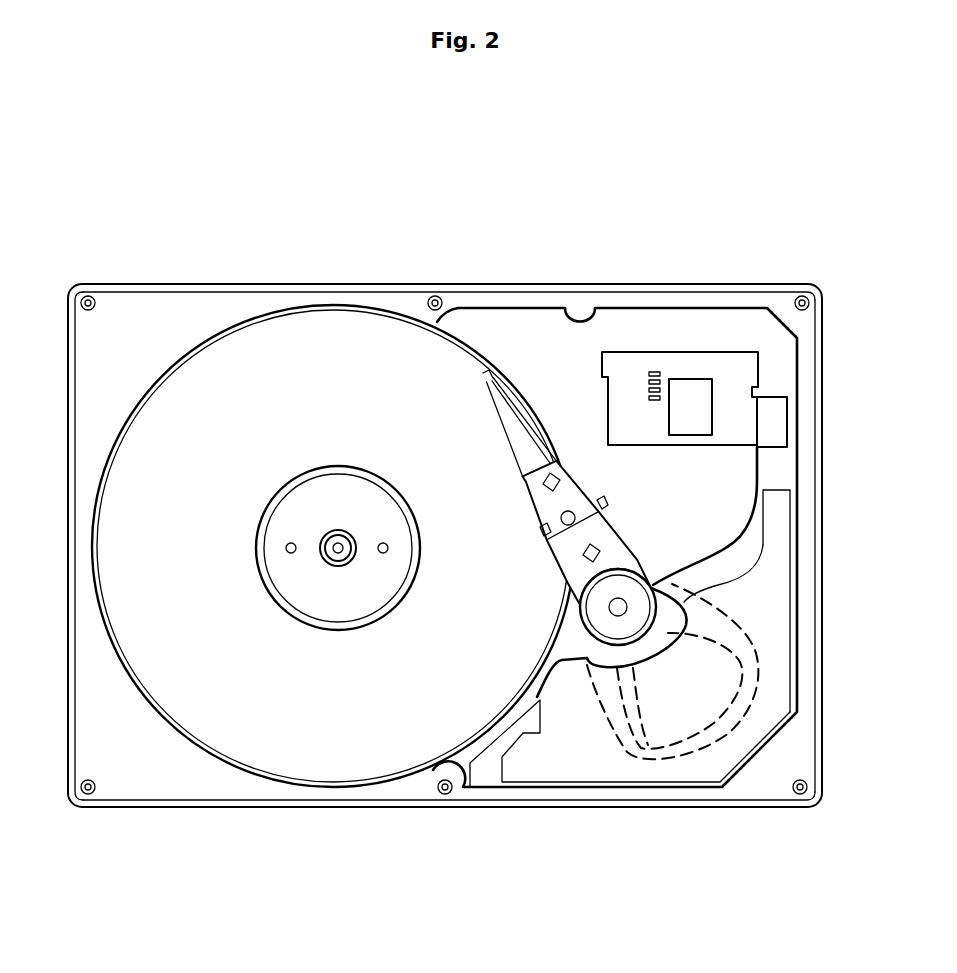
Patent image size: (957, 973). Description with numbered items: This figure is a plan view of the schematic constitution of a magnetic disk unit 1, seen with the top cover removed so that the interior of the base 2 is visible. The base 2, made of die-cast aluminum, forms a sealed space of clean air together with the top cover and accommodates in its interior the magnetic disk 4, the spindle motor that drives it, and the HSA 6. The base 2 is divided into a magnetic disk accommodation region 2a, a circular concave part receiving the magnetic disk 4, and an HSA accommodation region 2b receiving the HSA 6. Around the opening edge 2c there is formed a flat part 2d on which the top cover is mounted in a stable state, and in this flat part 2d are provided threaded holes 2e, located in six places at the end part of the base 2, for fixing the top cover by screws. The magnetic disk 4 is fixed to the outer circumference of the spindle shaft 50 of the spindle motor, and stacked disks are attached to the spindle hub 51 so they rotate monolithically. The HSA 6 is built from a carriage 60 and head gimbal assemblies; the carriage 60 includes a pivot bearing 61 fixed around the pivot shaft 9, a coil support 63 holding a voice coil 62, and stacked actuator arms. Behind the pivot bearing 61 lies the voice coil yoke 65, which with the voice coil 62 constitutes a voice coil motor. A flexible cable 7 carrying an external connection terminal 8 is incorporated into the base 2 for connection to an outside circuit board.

The magnetic disk unit 1 is at (451, 195).
The base 2 is at (190, 286).
The magnetic disk accommodation region 2a is at (312, 776).
The HSA accommodation region 2b is at (778, 470).
The opening edge 2c is at (580, 316).
The flat part 2d is at (128, 315).
The threaded holes 2e is at (88, 296).
The magnetic disk 4 is at (325, 340).
The HSA 6 is at (612, 494).
The flexible cable 7 is at (725, 540).
The external connection terminal 8 is at (690, 352).
The pivot shaft 9 is at (618, 600).
The spindle shaft 50 is at (335, 540).
The spindle hub 51 is at (337, 605).
The carriage 60 is at (577, 640).
The pivot bearing 61 is at (582, 630).
The voice coil 62 is at (757, 682).
The coil support 63 is at (715, 622).
The voice coil yoke 65 is at (625, 765).